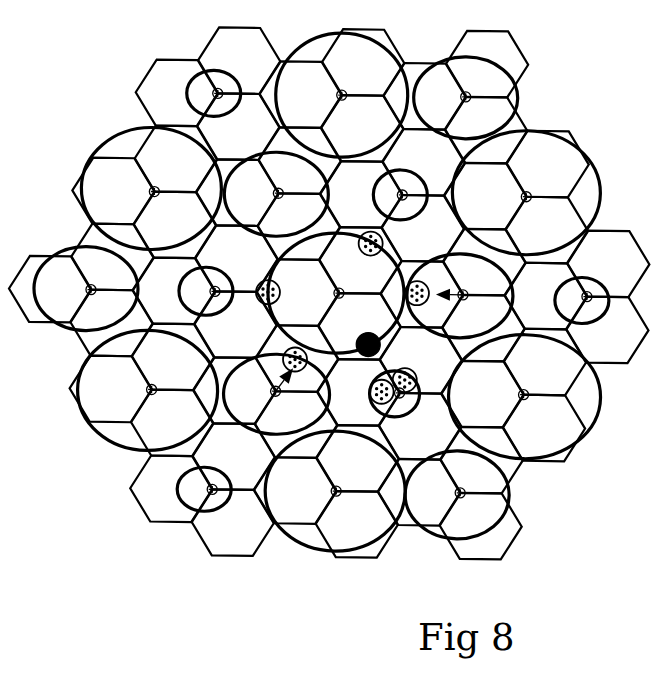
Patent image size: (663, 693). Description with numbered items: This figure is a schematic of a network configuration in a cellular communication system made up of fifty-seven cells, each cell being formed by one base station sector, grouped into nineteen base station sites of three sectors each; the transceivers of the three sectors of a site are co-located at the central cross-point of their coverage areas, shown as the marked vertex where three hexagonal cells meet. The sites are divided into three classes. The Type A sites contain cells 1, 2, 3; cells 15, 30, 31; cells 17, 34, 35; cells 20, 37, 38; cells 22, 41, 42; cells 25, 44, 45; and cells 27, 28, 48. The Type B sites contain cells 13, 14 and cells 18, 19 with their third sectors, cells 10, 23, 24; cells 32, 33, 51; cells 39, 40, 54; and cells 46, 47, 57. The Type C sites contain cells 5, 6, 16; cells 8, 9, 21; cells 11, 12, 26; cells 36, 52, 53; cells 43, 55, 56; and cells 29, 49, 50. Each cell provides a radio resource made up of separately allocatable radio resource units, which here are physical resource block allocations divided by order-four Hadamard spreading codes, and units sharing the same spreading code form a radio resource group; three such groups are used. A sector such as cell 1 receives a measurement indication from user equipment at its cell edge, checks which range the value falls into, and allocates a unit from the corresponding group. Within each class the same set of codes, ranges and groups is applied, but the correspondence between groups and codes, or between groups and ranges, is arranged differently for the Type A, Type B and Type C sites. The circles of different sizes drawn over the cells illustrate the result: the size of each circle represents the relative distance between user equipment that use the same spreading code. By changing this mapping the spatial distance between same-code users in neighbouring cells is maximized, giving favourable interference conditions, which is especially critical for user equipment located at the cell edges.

The base station sector 1 is at (359, 326).
The base station sector 2 is at (298, 292).
The base station sector 3 is at (360, 260).
The base station sector 5 is at (421, 360).
The base station sector 6 is at (358, 392).
The base station sector 8 is at (235, 324).
The base station sector 9 is at (236, 258).
The base station sector 10 is at (298, 226).
The base station sector 11 is at (361, 194).
The base station sector 12 is at (422, 228).
The base station sector 13 is at (484, 262).
The base station sector 14 is at (483, 328).
The base station sector 15 is at (482, 394).
The base station sector 16 is at (420, 426).
The base station sector 17 is at (357, 458).
The base station sector 18 is at (296, 424).
The base station sector 19 is at (234, 390).
The base station sector 20 is at (173, 356).
The base station sector 21 is at (174, 290).
The base station sector 22 is at (174, 224).
The base station sector 23 is at (237, 192).
The base station sector 24 is at (299, 160).
The base station sector 25 is at (362, 128).
The base station sector 26 is at (423, 162).
The base station sector 27 is at (485, 196).
The base station sector 28 is at (546, 229).
The base station sector 29 is at (545, 295).
The base station sector 30 is at (545, 361).
The base station sector 31 is at (544, 427).
The base station sector 32 is at (481, 460).
The base station sector 33 is at (419, 492).
The base station sector 34 is at (356, 524).
The base station sector 35 is at (295, 490).
The base station sector 36 is at (233, 456).
The base station sector 37 is at (172, 422).
The base station sector 38 is at (110, 388).
The base station sector 39 is at (111, 322).
The base station sector 40 is at (112, 256).
The base station sector 41 is at (113, 190).
The base station sector 42 is at (175, 158).
The base station sector 43 is at (238, 126).
The base station sector 44 is at (300, 94).
The base station sector 45 is at (363, 62).
The base station sector 46 is at (424, 96).
The base station sector 47 is at (486, 130).
The base station sector 48 is at (547, 163).
The base station sector 49 is at (608, 263).
The base station sector 50 is at (607, 329).
The base station sector 51 is at (480, 526).
The base station sector 52 is at (232, 522).
The base station sector 53 is at (171, 488).
The base station sector 54 is at (50, 289).
The base station sector 55 is at (176, 92).
The base station sector 56 is at (239, 60).
The base station sector 57 is at (487, 64).